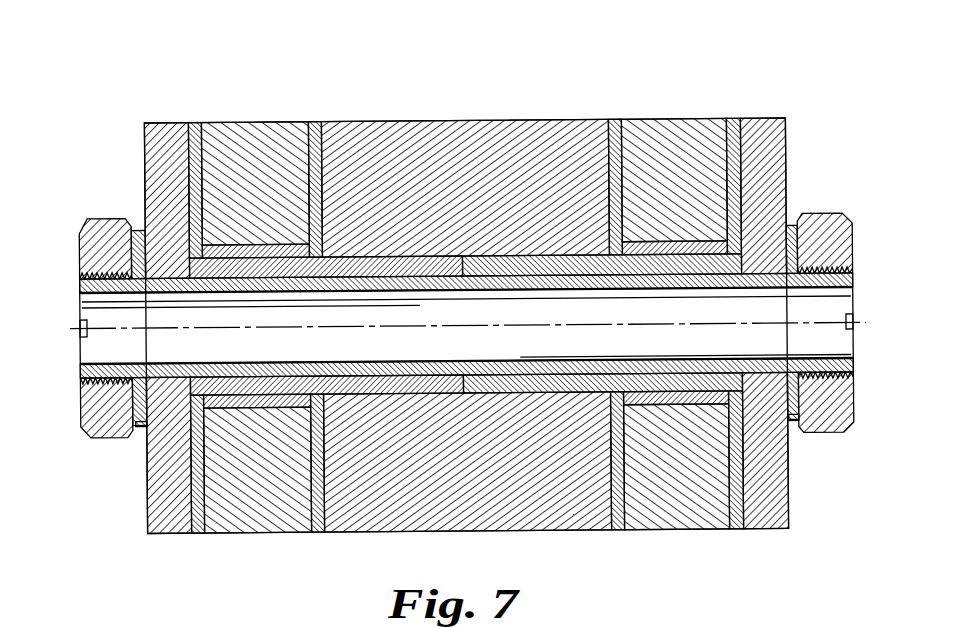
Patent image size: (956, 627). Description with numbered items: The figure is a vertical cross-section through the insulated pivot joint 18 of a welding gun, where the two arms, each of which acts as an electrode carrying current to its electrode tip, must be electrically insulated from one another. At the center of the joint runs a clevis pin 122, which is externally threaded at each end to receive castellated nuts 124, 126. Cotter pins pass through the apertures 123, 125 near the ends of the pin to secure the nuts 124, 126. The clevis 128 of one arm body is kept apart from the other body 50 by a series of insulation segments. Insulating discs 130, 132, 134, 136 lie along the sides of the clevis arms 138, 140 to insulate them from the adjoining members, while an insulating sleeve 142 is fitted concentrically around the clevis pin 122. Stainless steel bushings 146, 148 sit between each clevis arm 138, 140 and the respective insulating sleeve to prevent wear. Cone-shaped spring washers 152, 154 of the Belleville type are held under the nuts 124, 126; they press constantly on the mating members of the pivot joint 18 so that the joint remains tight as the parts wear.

The pivot joint 18 is at (77, 493).
The body 50 is at (445, 122).
The clevis pin 122 is at (123, 291).
The aperture 123 is at (95, 316).
The castellated nut 124 is at (78, 236).
The aperture 125 is at (846, 320).
The castellated nut 126 is at (855, 245).
The clevis 128 is at (270, 126).
The insulating disc 130 is at (187, 139).
The insulating disc 132 is at (337, 126).
The insulating disc 134 is at (623, 146).
The insulating disc 136 is at (720, 131).
The clevis arm 138 is at (213, 170).
The clevis arm 140 is at (770, 164).
The insulating sleeve 142 is at (466, 416).
The stainless steel bushing 146 is at (220, 245).
The stainless steel bushing 148 is at (676, 208).
The cone-shaped spring washer 152 is at (138, 425).
The cone-shaped spring washer 154 is at (142, 428).